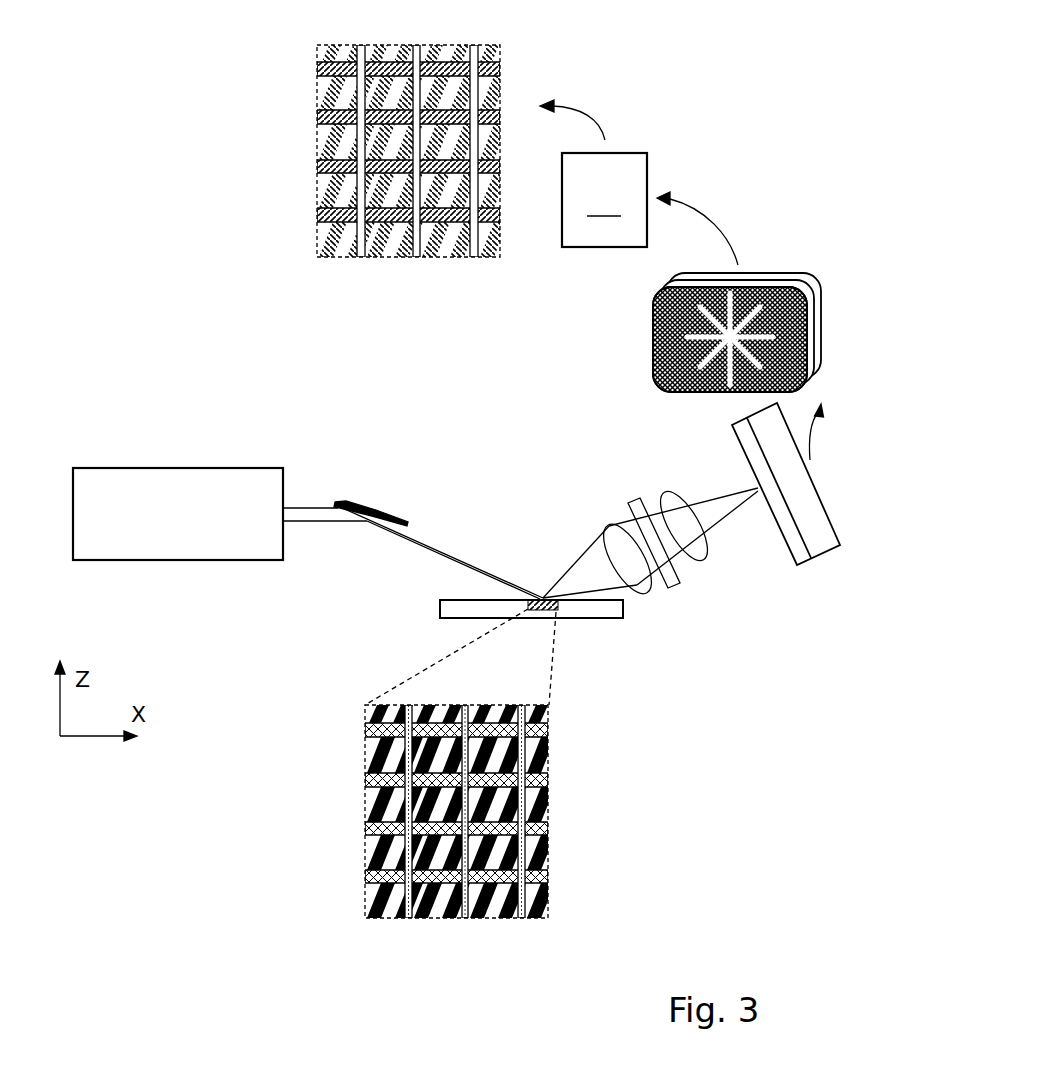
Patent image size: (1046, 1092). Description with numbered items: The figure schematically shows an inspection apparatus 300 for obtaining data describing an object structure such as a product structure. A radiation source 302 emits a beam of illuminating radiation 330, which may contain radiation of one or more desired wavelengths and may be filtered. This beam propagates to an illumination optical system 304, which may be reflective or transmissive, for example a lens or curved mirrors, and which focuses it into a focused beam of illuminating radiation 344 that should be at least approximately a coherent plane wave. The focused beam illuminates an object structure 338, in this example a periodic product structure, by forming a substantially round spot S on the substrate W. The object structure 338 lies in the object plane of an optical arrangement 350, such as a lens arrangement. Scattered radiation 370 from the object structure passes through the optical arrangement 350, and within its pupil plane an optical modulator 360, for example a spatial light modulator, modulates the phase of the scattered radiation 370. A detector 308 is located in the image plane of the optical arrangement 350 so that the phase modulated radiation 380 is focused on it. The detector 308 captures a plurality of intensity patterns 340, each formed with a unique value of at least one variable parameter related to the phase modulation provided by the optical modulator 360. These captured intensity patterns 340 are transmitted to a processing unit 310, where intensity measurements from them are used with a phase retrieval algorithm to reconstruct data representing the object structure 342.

The inspection apparatus 300 is at (199, 293).
The radiation source 302 is at (178, 514).
The illumination optical system 304 is at (361, 506).
The detector 308 is at (800, 568).
The processing unit 310 is at (648, 173).
The beam of illuminating radiation 330 is at (317, 514).
The object structure 338 is at (549, 822).
The intensity patterns 340 is at (760, 273).
The data representing the object structure 342 is at (463, 44).
The focused beam of illuminating radiation 344 is at (425, 535).
The optical arrangement 350 is at (703, 562).
The optical modulator 360 is at (636, 500).
The scattered radiation 370 is at (578, 585).
The phase modulated radiation 380 is at (720, 510).
The spot S is at (545, 598).
The substrate W is at (440, 606).